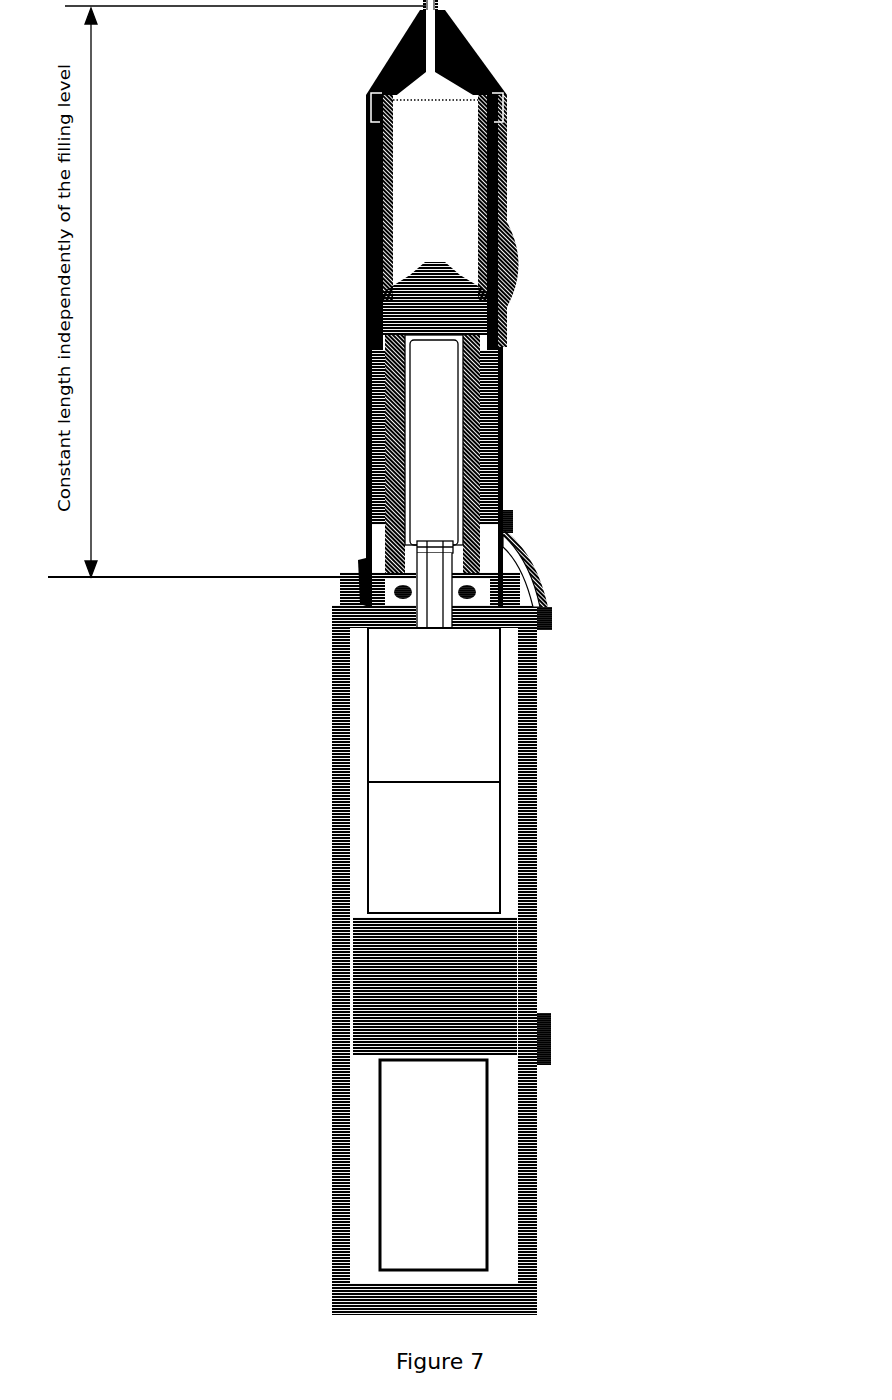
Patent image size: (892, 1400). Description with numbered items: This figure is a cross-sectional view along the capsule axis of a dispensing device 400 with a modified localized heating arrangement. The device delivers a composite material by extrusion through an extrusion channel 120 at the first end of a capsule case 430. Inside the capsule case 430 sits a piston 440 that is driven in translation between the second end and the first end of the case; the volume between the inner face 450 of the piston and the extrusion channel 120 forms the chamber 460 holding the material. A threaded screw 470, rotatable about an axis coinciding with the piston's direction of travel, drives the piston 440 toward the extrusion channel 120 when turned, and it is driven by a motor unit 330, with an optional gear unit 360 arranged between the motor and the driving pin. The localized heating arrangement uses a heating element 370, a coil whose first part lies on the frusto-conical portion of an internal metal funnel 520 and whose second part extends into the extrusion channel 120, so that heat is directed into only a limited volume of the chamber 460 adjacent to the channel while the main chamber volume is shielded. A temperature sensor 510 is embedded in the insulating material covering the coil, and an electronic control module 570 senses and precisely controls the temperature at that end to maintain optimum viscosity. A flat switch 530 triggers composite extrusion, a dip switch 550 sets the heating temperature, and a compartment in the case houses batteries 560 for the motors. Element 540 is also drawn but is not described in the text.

The extrusion channel 120 is at (445, 8).
The heating element 370 is at (382, 68).
The capsule case 430 is at (365, 157).
The inner face of the piston 450 is at (428, 268).
The threaded screw 470 is at (418, 477).
The piston 440 is at (447, 308).
The chamber 460 is at (462, 122).
The temperature sensor 510 is at (482, 62).
The internal metal funnel 520 is at (462, 100).
The flat switch 530 is at (515, 232).
The locking elements 540 is at (602, 527).
The dispensing device 400 is at (567, 802).
The gear unit 360 is at (463, 707).
The motor unit 330 is at (435, 828).
The electronic control module 570 is at (388, 970).
The dip switch 550 is at (551, 1027).
The batteries 560 is at (422, 1130).